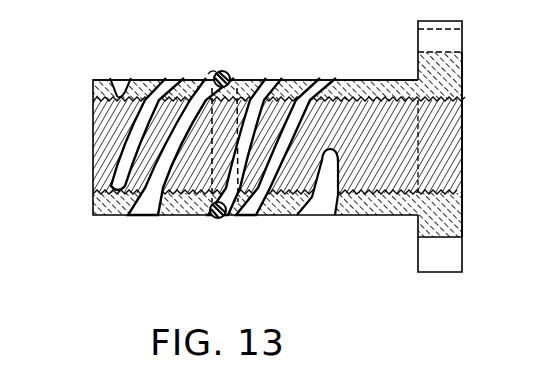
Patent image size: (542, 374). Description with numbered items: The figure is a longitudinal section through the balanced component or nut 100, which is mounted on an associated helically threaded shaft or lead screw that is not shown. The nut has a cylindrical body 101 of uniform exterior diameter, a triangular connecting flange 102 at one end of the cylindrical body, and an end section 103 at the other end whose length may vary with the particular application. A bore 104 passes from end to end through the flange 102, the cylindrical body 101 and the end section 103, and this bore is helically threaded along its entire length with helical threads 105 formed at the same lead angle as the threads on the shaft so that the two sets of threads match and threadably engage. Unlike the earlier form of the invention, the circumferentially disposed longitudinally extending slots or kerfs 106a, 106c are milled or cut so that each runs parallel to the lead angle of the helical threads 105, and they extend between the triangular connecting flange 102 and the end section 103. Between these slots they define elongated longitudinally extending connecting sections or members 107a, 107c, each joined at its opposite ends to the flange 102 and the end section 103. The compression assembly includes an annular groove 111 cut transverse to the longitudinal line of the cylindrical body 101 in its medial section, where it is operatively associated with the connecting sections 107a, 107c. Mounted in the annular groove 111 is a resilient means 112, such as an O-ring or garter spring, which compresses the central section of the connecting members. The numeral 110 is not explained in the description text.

The balanced component or nut 100 is at (316, 53).
The cylindrical body 101 is at (153, 216).
The triangular connecting flange 102 is at (458, 68).
The end section 103 is at (107, 79).
The bore 104 is at (435, 158).
The helical threads 105 is at (437, 97).
The slot or kerf 106a is at (265, 100).
The slot or kerf 106c is at (293, 210).
The connecting section or member 107a is at (300, 83).
The connecting section or member 107c is at (271, 228).
The ball 110 is at (217, 68).
The annular groove 111 is at (212, 70).
The resilient means 112 is at (226, 70).